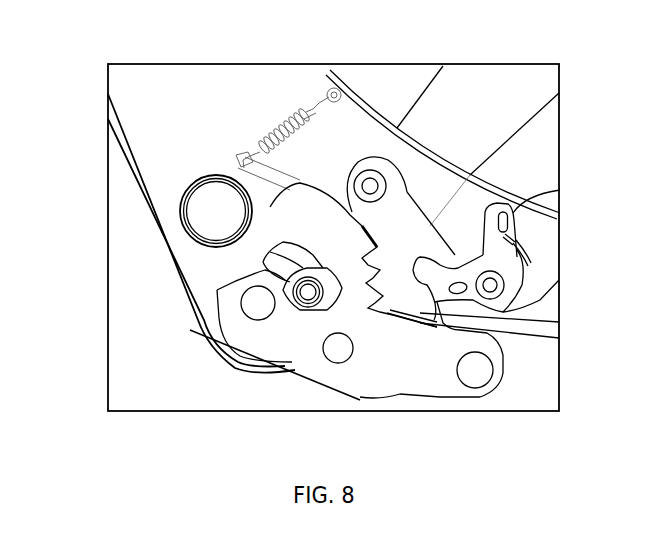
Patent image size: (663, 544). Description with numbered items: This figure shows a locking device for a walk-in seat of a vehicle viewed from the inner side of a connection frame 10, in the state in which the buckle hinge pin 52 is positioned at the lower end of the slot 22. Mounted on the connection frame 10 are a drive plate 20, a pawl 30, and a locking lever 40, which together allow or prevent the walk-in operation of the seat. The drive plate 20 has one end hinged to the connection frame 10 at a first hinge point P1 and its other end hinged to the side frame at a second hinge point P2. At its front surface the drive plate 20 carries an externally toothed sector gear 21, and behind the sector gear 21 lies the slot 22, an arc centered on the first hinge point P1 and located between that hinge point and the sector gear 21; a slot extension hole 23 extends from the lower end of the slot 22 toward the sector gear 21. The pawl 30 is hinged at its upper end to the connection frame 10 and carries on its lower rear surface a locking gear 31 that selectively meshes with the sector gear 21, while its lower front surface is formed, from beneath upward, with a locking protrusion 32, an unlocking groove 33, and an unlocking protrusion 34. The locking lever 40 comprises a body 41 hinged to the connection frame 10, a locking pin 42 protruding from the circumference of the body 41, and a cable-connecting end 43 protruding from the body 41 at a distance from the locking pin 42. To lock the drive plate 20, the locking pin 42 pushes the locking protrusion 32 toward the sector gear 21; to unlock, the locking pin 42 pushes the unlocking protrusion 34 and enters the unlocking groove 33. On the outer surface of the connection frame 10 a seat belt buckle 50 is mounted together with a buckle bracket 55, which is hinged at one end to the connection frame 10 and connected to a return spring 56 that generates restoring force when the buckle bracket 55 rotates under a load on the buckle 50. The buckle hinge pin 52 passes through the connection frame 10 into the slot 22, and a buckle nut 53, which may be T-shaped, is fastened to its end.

The connection frame 10 is at (128, 181).
The drive plate 20 is at (216, 312).
The sector gear 21 is at (360, 303).
The slot 22 is at (287, 266).
The slot extension hole 23 is at (326, 337).
The pawl 30 is at (370, 158).
The locking gear 31 is at (385, 297).
The locking protrusion 32 is at (440, 333).
The unlocking groove 33 is at (500, 333).
The unlocking protrusion 34 is at (500, 207).
The locking lever 40 is at (527, 266).
The body 41 is at (510, 287).
The locking pin 42 is at (505, 352).
The cable-connecting end 43 is at (560, 190).
The buckle 50 is at (467, 95).
The buckle hinge pin 52 is at (296, 280).
The buckle nut 53 is at (217, 290).
The buckle bracket 55 is at (255, 152).
The return spring 56 is at (302, 120).
The first hinge point P1 is at (257, 307).
The second hinge point P2 is at (497, 380).